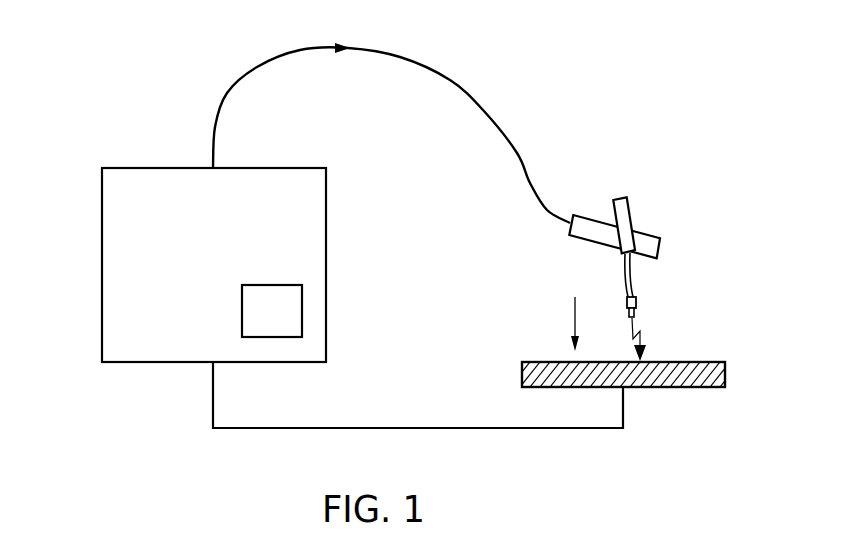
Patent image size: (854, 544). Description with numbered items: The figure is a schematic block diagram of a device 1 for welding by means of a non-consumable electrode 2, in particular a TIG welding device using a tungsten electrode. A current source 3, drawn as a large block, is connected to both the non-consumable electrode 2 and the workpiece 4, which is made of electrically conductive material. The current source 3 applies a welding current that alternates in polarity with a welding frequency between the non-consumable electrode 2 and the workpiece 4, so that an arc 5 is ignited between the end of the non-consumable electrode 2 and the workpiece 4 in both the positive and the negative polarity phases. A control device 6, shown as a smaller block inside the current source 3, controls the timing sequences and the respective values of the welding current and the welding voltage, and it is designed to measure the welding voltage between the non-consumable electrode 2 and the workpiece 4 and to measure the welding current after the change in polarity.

The device for welding 1 is at (134, 64).
The non-consumable electrode 2 is at (635, 285).
The current source 3 is at (118, 265).
The workpiece 4 is at (717, 373).
The arc 5 is at (640, 335).
The control device 6 is at (247, 295).